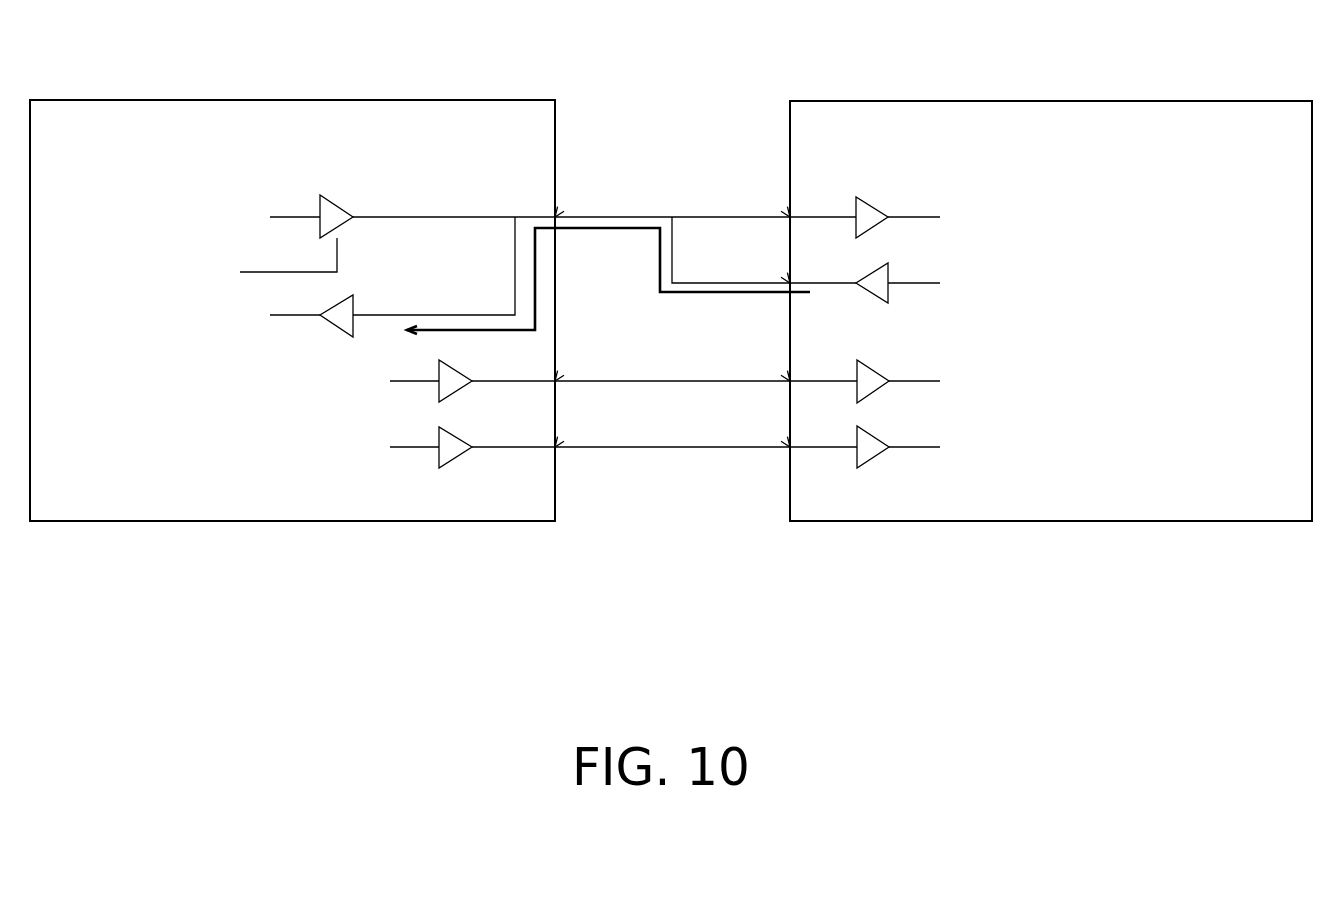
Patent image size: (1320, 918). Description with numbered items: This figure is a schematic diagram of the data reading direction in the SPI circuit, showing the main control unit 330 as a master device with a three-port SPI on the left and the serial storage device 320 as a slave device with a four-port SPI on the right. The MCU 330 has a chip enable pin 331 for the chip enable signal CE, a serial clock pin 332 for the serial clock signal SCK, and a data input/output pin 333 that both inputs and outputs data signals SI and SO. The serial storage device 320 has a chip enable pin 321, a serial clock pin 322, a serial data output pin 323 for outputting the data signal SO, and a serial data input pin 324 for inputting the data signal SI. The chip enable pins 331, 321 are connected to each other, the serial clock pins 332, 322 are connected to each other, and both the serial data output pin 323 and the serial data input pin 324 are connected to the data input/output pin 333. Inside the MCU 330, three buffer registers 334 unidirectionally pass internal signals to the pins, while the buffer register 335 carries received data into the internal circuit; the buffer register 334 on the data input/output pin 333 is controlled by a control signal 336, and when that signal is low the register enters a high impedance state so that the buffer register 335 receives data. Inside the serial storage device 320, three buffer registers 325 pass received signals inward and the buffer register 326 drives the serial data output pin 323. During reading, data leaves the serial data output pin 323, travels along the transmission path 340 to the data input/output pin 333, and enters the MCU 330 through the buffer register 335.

The main control unit 330 is at (375, 100).
The serial storage device 320 is at (953, 101).
The buffer register 334 is at (340, 208).
The buffer register 335 is at (338, 337).
The control signal 336 is at (262, 272).
The data input/output pin 333 is at (560, 210).
The serial data input pin 324 is at (785, 212).
The transmission path 340 is at (627, 227).
The serial data output pin 323 is at (785, 280).
The buffer register 325 is at (880, 207).
The buffer register 326 is at (890, 272).
The serial clock pin 332 is at (560, 376).
The serial clock pin 322 is at (785, 378).
The chip enable pin 331 is at (560, 442).
The chip enable pin 321 is at (785, 444).